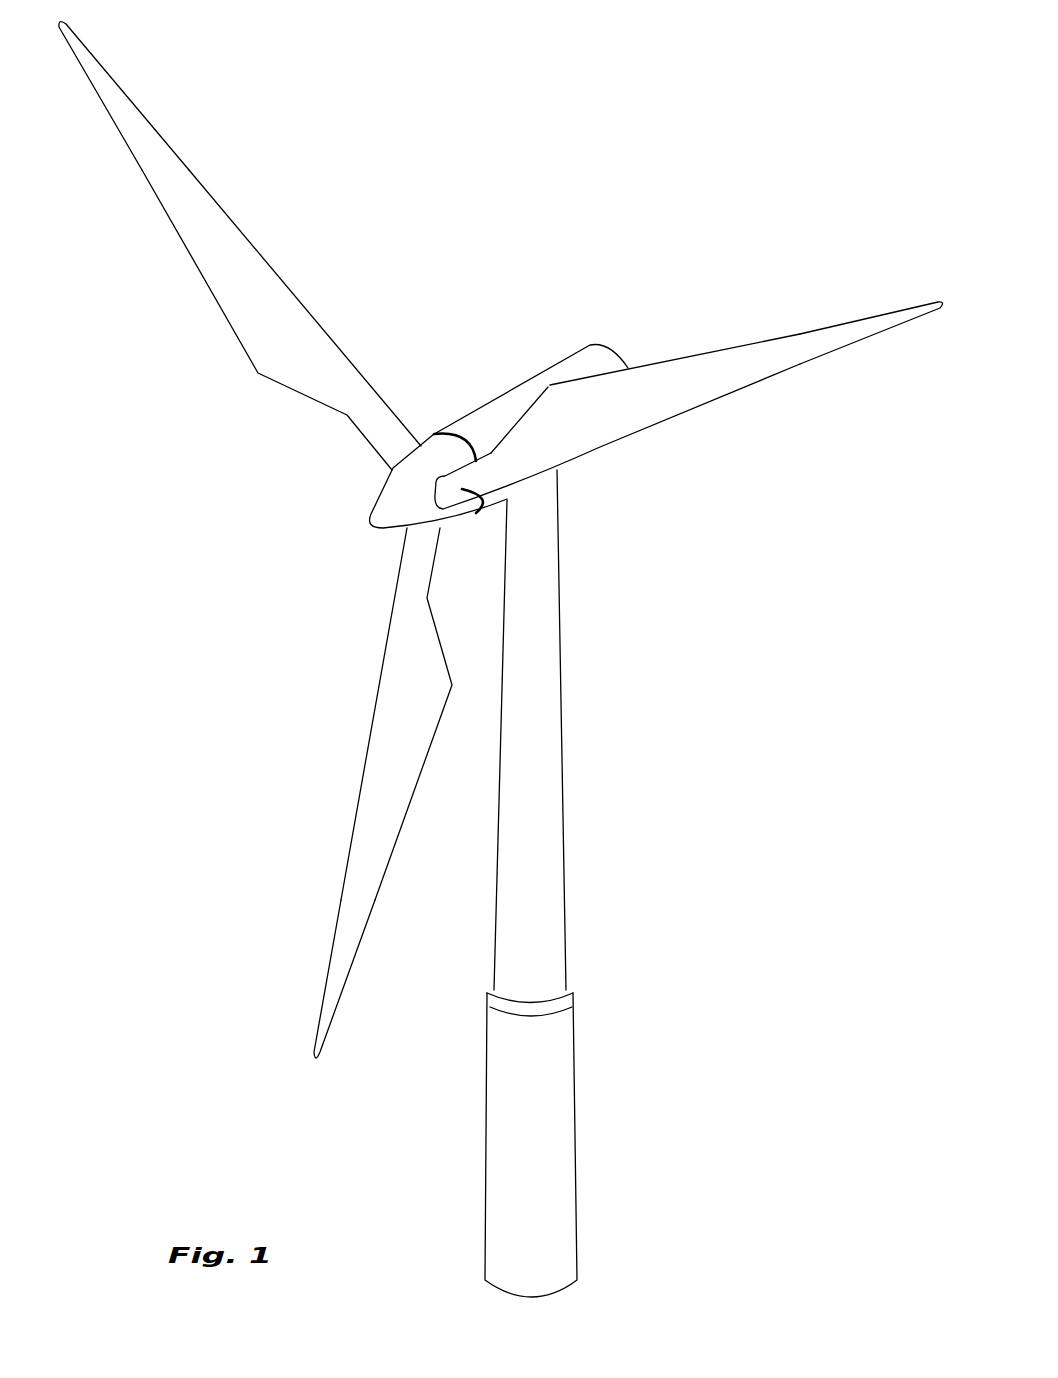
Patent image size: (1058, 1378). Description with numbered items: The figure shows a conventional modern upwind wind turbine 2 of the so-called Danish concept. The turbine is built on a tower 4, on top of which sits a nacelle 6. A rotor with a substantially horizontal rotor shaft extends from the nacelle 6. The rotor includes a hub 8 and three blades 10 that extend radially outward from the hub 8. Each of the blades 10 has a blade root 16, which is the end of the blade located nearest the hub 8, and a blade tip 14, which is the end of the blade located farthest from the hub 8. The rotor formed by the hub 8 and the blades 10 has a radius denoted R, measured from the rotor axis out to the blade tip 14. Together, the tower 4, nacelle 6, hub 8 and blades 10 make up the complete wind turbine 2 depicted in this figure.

The wind turbine 2 is at (676, 817).
The tower 4 is at (550, 733).
The nacelle 6 is at (493, 412).
The hub 8 is at (392, 503).
The blades 10 is at (273, 343).
The blade tip 14 is at (105, 85).
The blade root 16 is at (402, 453).